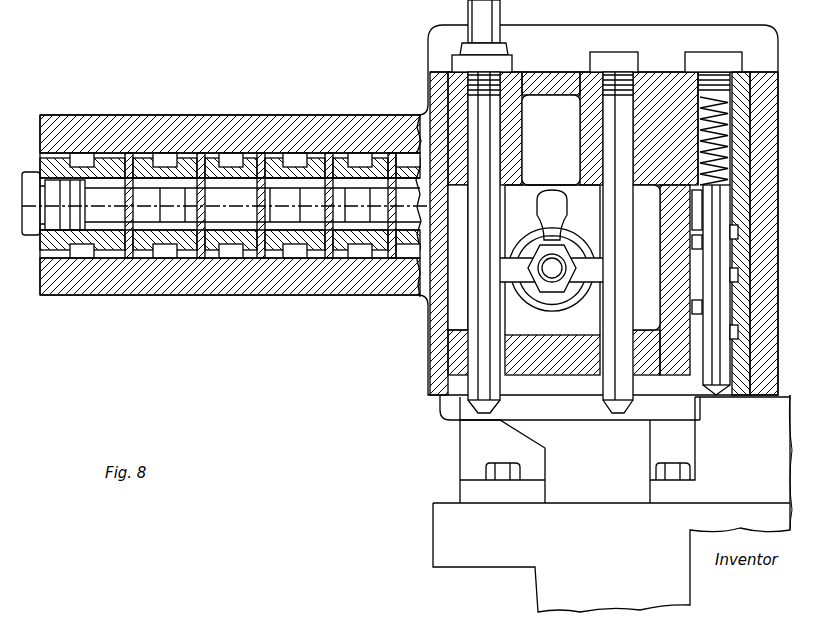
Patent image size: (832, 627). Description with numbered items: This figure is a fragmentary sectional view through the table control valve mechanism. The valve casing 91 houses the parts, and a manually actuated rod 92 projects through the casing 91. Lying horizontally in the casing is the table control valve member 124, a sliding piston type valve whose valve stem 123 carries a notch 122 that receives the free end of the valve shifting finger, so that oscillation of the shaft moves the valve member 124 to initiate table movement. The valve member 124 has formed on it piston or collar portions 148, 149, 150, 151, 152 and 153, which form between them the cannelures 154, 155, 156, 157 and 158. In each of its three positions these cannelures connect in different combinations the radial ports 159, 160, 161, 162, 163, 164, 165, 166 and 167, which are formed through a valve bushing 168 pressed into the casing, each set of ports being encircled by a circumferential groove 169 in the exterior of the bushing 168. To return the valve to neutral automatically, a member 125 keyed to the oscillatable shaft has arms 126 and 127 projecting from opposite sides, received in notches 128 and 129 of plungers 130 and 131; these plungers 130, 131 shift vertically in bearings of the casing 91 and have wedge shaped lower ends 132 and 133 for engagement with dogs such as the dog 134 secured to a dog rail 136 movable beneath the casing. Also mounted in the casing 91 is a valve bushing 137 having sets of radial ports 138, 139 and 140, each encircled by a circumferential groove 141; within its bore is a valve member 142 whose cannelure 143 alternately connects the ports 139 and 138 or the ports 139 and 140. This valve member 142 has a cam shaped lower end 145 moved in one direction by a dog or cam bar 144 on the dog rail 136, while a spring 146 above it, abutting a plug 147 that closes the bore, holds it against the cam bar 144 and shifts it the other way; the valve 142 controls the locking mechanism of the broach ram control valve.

The valve casing 91 is at (566, 60).
The rod 92 is at (485, 25).
The notch 122 is at (545, 205).
The valve stem 123 is at (560, 195).
The valve member 124 is at (400, 170).
The member 125 is at (552, 294).
The arm 126 is at (470, 290).
The arm 127 is at (600, 262).
The notch 128 is at (460, 335).
The notch 129 is at (630, 262).
The plunger 130 is at (505, 345).
The plunger 131 is at (630, 380).
The wedge shaped lower end 132 is at (458, 418).
The wedge shaped lower end 133 is at (605, 400).
The dog 134 is at (458, 464).
The dog rail 136 is at (440, 516).
The valve bushing 137 is at (760, 75).
The radial ports 138 is at (735, 240).
The radial ports 139 is at (735, 275).
The radial ports 140 is at (735, 310).
The circumferential groove 141 is at (755, 215).
The valve member 142 is at (718, 335).
The cannelure 143 is at (730, 250).
The dog or cam bar 144 is at (780, 420).
The cam shaped lower end 145 is at (712, 390).
The spring 146 is at (715, 100).
The plug 147 is at (715, 55).
The piston or collar portion 148 is at (95, 245).
The piston or collar portion 149 is at (128, 235).
The piston or collar portion 150 is at (190, 240).
The piston or collar portion 151 is at (240, 235).
The piston or collar portion 152 is at (310, 235).
The piston or collar portion 153 is at (395, 265).
The cannelure 154 is at (100, 255).
The cannelure 155 is at (165, 260).
The cannelure 156 is at (210, 235).
The cannelure 157 is at (278, 240).
The cannelure 158 is at (345, 240).
The radial port 159 is at (132, 160).
The radial port 160 is at (152, 165).
The radial port 161 is at (210, 165).
The radial port 162 is at (220, 165).
The radial port 163 is at (290, 165).
The radial port 164 is at (290, 160).
The radial port 165 is at (335, 160).
The radial port 166 is at (370, 165).
The radial port 167 is at (410, 165).
The valve bushing 168 is at (62, 130).
The circumferential groove 169 is at (105, 155).